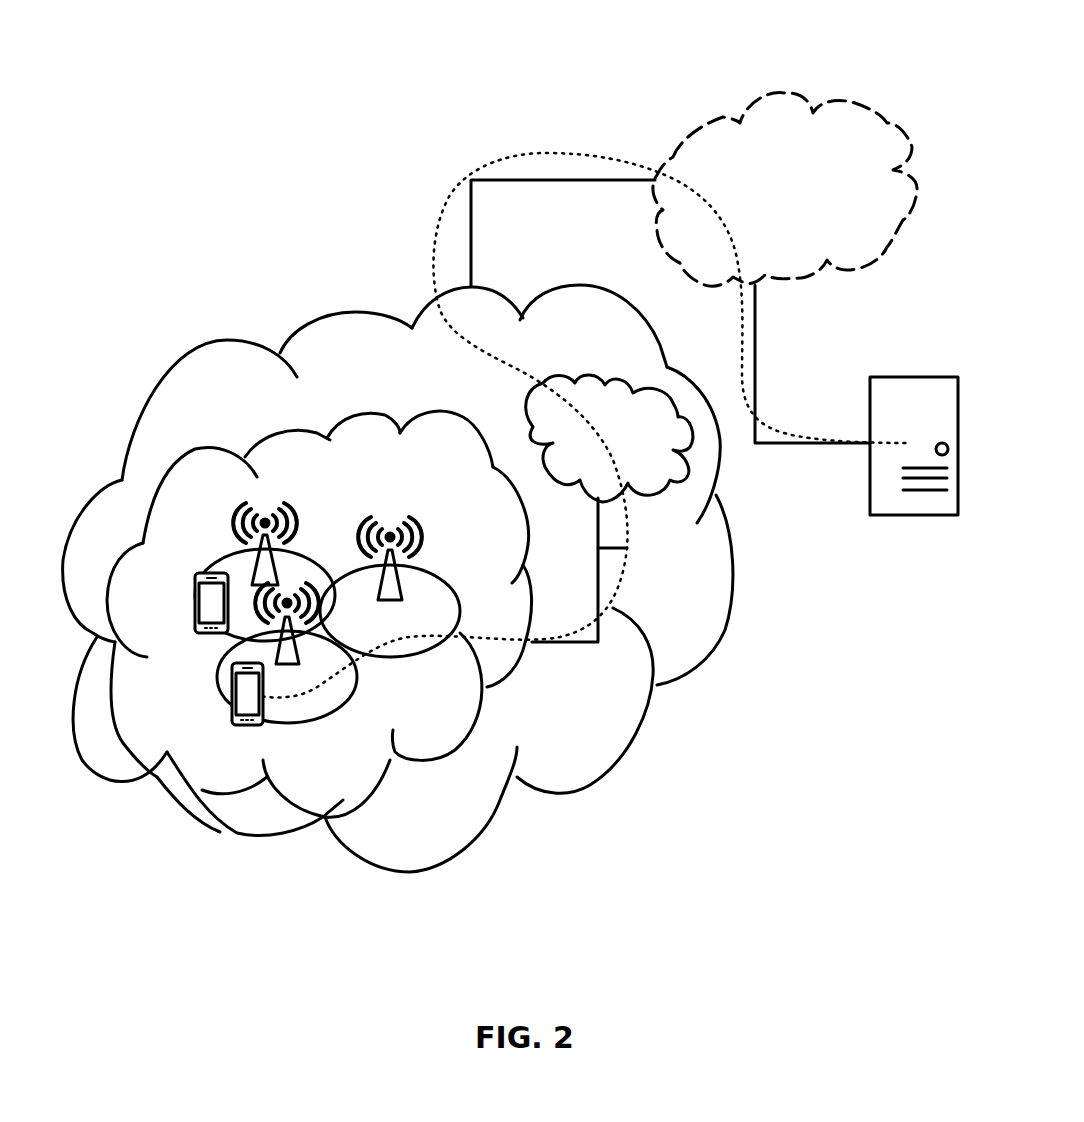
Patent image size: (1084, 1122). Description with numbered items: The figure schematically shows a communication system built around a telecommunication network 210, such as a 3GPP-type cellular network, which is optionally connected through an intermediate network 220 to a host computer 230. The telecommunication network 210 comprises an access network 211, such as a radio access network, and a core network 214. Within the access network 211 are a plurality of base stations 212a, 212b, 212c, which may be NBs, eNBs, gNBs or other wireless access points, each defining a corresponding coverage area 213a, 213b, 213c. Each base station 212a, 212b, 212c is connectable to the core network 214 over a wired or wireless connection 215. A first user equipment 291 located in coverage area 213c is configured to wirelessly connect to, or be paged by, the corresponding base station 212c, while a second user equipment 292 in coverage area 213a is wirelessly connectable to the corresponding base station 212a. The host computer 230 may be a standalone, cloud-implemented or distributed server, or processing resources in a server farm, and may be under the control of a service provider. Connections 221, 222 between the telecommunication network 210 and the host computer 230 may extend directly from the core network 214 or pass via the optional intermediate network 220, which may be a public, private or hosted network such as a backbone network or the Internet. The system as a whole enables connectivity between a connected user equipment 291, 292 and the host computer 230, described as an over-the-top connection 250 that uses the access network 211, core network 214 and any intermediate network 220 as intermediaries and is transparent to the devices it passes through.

The telecommunication network 210 is at (398, 578).
The access network 211 is at (336, 497).
The base station 212a is at (300, 665).
The base station 212b is at (413, 540).
The base station 212c is at (237, 527).
The coverage area 213a is at (358, 678).
The coverage area 213b is at (460, 612).
The coverage area 213c is at (220, 570).
The core network 214 is at (609, 508).
The connection 215 is at (598, 548).
The intermediate network 220 is at (785, 190).
The connection 221 is at (565, 178).
The connection 222 is at (822, 443).
The host computer 230 is at (914, 462).
The OTT connection 250 is at (445, 205).
The first user equipment 291 is at (197, 632).
The second user equipment 292 is at (232, 718).